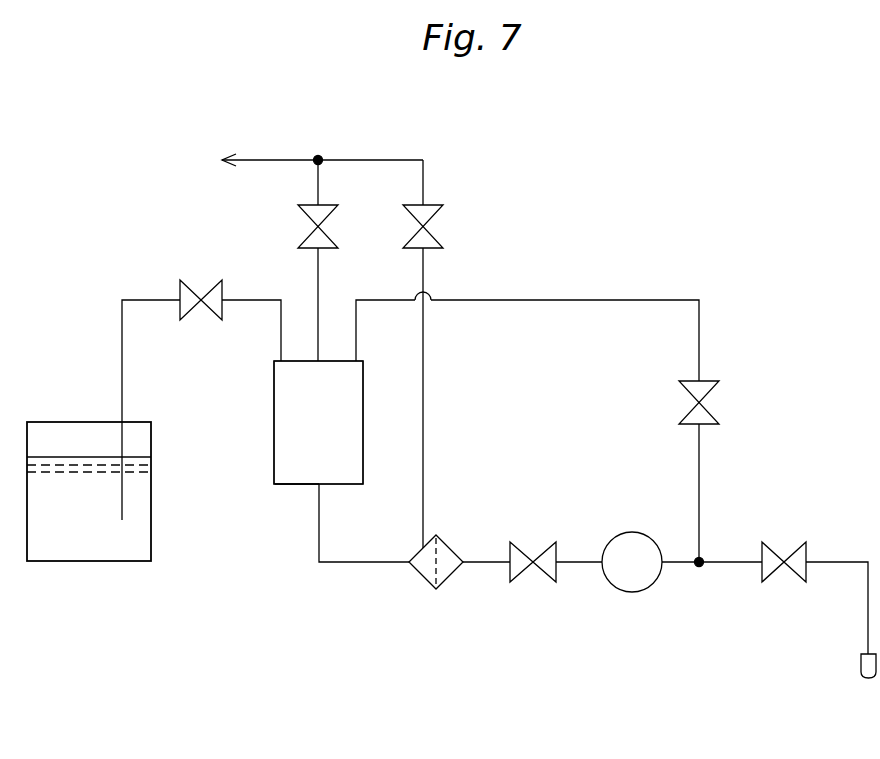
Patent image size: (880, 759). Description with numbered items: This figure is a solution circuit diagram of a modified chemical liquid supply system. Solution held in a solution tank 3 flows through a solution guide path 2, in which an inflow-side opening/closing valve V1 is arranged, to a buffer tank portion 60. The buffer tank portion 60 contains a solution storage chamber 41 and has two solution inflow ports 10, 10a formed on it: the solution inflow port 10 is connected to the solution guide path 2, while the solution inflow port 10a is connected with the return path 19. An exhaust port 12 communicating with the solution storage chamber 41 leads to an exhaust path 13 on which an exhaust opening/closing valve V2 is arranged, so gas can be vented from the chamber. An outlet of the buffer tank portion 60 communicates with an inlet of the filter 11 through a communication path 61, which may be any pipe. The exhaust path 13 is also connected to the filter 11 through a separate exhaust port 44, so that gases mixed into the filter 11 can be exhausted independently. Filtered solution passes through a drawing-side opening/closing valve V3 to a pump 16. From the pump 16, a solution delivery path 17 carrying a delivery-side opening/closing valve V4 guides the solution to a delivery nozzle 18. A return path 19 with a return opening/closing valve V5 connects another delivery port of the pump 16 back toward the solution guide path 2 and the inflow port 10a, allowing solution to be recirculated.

The solution guide path 2 is at (138, 299).
The solution tank 3 is at (95, 562).
The inflow-side opening/closing valve V1 is at (207, 292).
The solution inflow port 10 is at (276, 362).
The solution inflow port 10a is at (357, 362).
The exhaust port 12 is at (314, 360).
The exhaust path 13 is at (380, 158).
The exhaust opening/closing valve V2 is at (325, 232).
The return path 19 is at (618, 299).
The return opening/closing valve V5 is at (705, 405).
The solution storage chamber 41 is at (295, 407).
The buffer tank portion 60 is at (287, 492).
The communication path 61 is at (336, 566).
The exhaust port 44 is at (422, 543).
The filter 11 is at (420, 576).
The drawing-side opening/closing valve V3 is at (540, 582).
The pump 16 is at (638, 590).
The delivery-side opening/closing valve V4 is at (791, 582).
The solution delivery path 17 is at (850, 560).
The delivery nozzle 18 is at (866, 679).